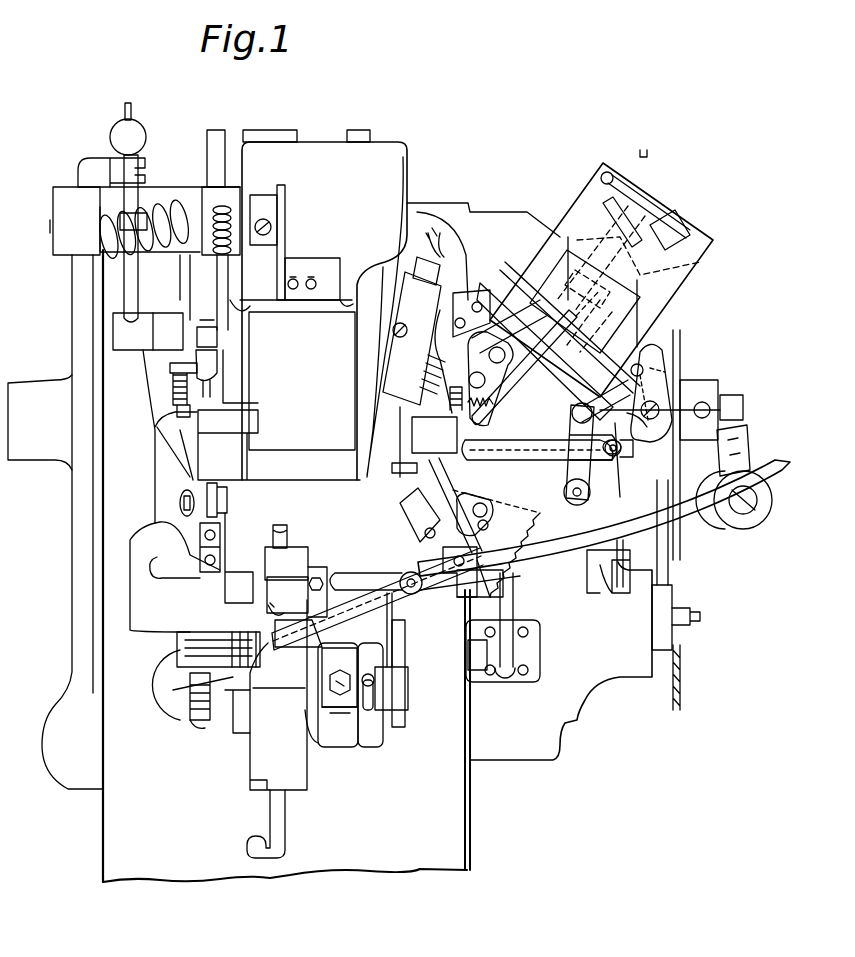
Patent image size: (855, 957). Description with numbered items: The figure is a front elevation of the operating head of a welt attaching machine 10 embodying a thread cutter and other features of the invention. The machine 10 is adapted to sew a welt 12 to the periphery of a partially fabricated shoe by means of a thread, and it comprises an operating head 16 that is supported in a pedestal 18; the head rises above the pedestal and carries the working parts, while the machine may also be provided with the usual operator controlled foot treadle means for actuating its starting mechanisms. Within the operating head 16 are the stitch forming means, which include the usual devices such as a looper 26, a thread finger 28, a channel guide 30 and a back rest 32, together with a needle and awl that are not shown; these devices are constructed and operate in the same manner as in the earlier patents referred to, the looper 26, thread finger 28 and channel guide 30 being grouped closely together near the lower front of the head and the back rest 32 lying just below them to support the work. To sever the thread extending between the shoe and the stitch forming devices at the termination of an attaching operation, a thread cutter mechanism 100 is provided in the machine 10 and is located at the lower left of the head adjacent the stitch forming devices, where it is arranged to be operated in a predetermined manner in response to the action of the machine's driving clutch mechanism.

The attaching machine 10 is at (500, 826).
The welt 12 is at (555, 553).
The operating head 16 is at (302, 393).
The pedestal 18 is at (108, 862).
The looper 26 is at (272, 538).
The thread finger 28 is at (270, 607).
The channel guide 30 is at (312, 585).
The back rest 32 is at (290, 668).
The thread cutter mechanism 100 is at (145, 726).